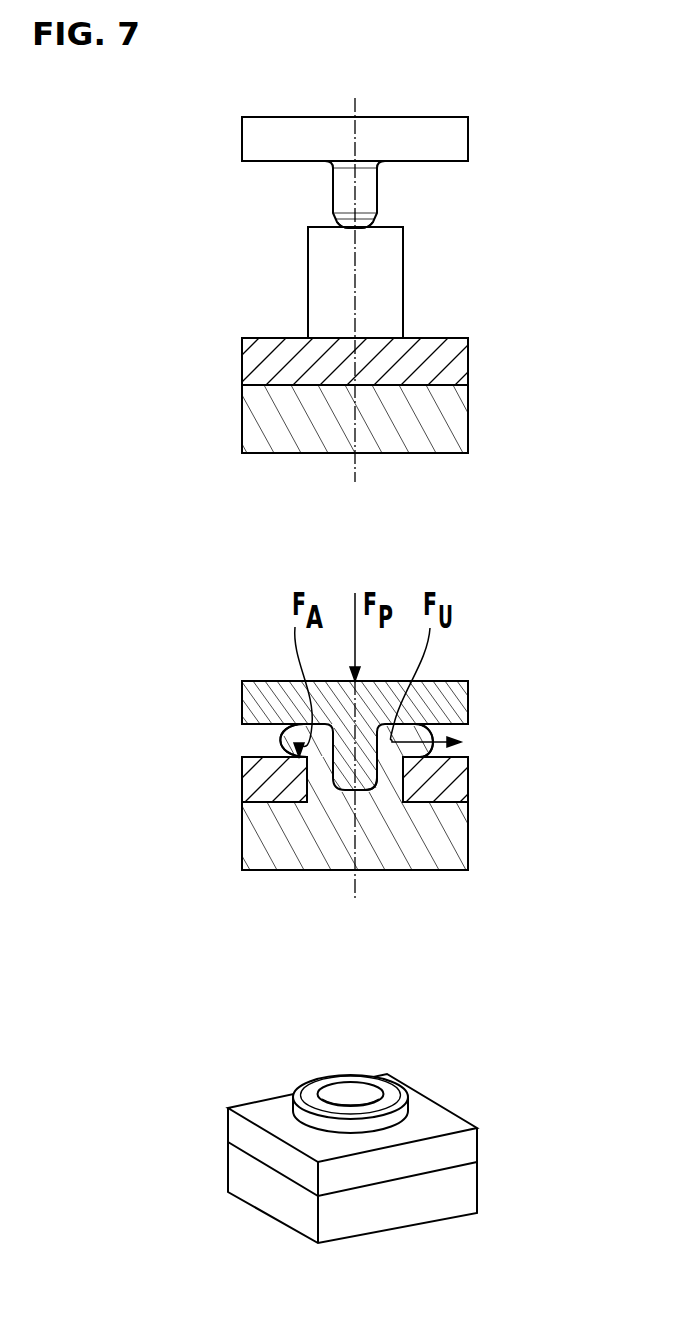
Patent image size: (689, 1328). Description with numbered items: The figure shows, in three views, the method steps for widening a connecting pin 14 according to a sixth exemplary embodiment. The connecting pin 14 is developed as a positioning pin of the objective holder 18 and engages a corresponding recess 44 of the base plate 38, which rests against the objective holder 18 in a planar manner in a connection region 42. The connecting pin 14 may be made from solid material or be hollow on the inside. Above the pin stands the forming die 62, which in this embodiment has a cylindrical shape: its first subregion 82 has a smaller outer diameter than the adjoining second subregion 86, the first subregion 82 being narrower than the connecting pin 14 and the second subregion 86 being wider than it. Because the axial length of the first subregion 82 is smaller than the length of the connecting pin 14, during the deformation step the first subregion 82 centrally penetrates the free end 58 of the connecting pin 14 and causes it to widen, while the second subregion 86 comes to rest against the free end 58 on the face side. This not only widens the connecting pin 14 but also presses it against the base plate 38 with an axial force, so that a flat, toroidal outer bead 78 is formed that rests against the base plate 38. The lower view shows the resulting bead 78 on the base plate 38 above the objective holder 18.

The connecting pin 14 is at (317, 275).
The objective holder 18 is at (257, 422).
The base plate 38 is at (447, 360).
The connection region 42 is at (457, 375).
The recess 44 is at (383, 780).
The free end 58 is at (388, 226).
The forming die 62 is at (285, 454).
The toroidal outer bead 78 is at (428, 736).
The first subregion 82 is at (338, 197).
The second subregion 86 is at (257, 134).